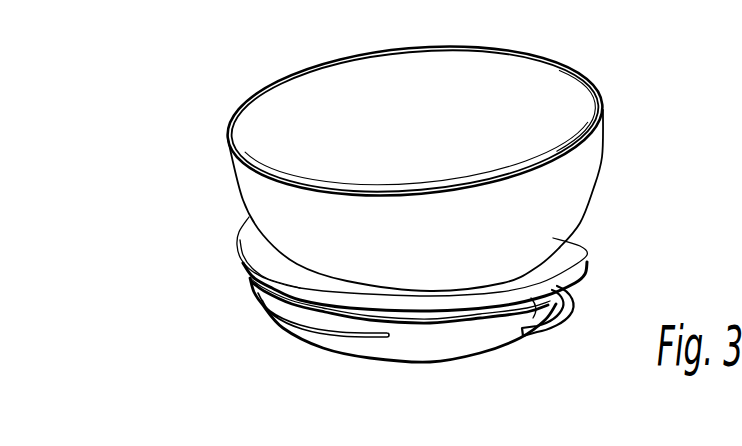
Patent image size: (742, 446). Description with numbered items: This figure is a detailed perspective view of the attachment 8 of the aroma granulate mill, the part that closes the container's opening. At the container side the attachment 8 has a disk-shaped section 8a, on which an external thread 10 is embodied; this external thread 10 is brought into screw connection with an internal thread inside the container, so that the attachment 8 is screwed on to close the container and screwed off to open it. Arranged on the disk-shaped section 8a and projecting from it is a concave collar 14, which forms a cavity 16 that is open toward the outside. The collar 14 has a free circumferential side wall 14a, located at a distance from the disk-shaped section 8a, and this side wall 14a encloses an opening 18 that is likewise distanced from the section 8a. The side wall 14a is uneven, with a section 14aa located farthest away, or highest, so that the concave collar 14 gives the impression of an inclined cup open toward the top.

The attachment 8 is at (435, 185).
The disk-shaped section at the container side 8a is at (258, 272).
The external thread 10 is at (563, 313).
The concave collar 14 is at (430, 255).
The circumferential side wall 14a is at (505, 52).
The section located farthest away 14aa is at (602, 97).
The cavity 16 is at (438, 148).
The opening 18 is at (377, 52).